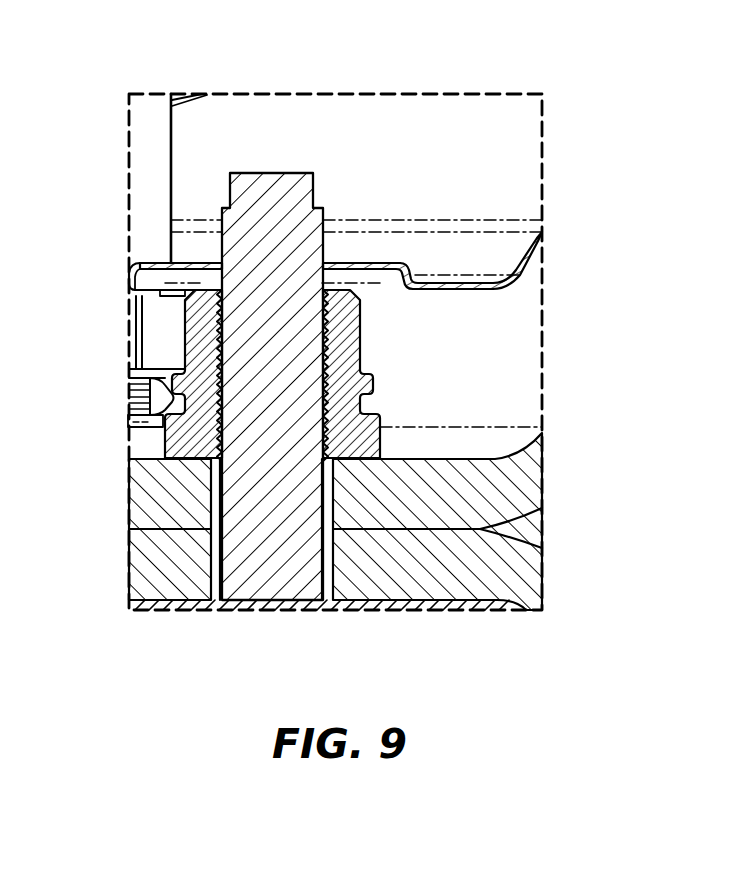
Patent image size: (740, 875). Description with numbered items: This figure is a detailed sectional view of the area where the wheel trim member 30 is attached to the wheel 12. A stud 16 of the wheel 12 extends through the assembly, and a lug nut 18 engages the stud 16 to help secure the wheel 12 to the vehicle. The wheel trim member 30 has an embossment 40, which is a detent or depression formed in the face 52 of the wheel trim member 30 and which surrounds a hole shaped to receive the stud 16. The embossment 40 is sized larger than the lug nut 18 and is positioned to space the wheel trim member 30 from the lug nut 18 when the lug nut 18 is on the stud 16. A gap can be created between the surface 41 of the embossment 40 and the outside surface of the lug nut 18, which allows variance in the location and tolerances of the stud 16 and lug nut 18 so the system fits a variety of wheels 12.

The wheel 12 is at (522, 354).
The stud 16 is at (263, 592).
The lug nut 18 is at (170, 380).
The wheel trim member 30 is at (435, 113).
The embossment 40 is at (162, 262).
The surface of the embossment 41 is at (332, 262).
The face 52 is at (212, 284).